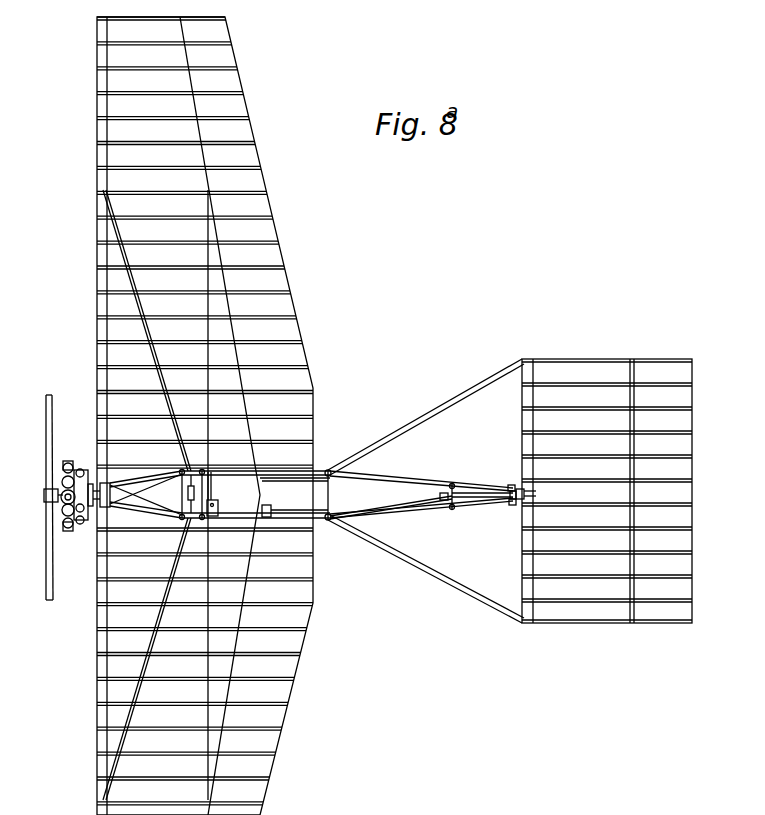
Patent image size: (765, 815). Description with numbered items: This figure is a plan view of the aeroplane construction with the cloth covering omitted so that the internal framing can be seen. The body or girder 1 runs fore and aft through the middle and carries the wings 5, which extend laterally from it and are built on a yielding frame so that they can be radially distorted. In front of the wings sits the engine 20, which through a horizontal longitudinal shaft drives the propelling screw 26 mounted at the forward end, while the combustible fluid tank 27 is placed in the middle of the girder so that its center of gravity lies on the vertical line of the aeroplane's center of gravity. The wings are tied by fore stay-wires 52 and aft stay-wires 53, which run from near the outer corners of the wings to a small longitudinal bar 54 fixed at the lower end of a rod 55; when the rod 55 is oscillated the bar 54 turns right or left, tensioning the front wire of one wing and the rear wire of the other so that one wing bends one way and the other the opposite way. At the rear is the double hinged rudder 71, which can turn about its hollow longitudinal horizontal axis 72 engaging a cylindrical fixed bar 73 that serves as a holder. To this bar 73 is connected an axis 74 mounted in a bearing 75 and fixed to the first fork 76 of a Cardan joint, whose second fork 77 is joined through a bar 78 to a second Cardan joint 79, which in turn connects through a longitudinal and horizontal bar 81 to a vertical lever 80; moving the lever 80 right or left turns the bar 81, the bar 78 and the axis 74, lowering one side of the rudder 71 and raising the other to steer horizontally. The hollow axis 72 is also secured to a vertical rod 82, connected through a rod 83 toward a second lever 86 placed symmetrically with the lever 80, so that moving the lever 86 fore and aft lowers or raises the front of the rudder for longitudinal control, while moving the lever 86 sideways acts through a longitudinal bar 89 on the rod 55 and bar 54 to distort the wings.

The body or girder 1 is at (158, 505).
The wings 5 is at (248, 185).
The engine 20 is at (78, 523).
The propelling screw 26 is at (46, 578).
The combustible fluid tank 27 is at (207, 520).
The fore stay-wires 52 is at (134, 300).
The aft stay-wires 53 is at (205, 302).
The longitudinal bar 54 is at (213, 496).
The rod 55 is at (216, 510).
The double hinged rudder 71 is at (684, 494).
The longitudinal horizontal axis 72 is at (515, 504).
The cylindrical fixed bar 73 is at (511, 500).
The axis 74 is at (478, 490).
The bearing 75 is at (512, 485).
The first fork of Cardan joint 76 is at (452, 485).
The second fork of Cardan joint 77 is at (445, 500).
The bar 78 is at (400, 500).
The second Cardan joint 79 is at (330, 523).
The vertical lever 80 is at (272, 514).
The longitudinal and horizontal bar 81 is at (302, 512).
The vertical rod 82 is at (538, 493).
The rod 83 is at (305, 478).
The lever 86 is at (276, 470).
The longitudinal bar 89 is at (213, 478).